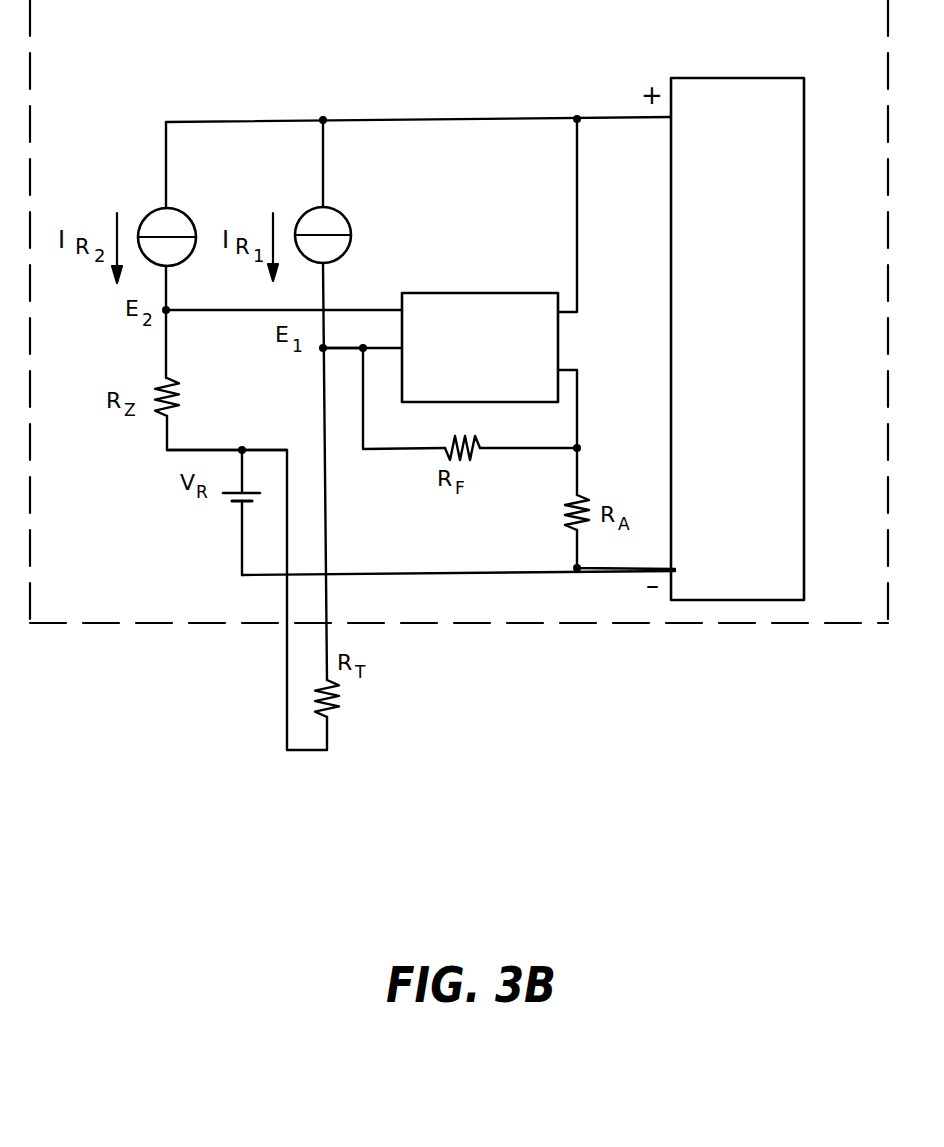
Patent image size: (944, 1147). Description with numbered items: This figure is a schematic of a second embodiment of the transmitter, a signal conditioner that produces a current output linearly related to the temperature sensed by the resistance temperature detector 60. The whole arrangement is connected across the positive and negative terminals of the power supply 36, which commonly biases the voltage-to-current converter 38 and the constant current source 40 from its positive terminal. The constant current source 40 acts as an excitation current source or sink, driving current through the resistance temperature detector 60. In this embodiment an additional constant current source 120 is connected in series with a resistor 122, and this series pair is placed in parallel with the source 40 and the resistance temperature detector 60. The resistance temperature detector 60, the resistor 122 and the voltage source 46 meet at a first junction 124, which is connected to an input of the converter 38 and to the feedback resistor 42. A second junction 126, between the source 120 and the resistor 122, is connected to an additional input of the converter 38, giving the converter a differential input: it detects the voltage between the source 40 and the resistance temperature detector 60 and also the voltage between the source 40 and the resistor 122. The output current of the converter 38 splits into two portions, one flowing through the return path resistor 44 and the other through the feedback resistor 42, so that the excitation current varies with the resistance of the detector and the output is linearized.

The power supply 36 is at (778, 148).
The additional constant current source 120 is at (183, 216).
The constant current source 40 is at (340, 213).
The voltage-to-current converter 38 is at (460, 293).
The second junction 126 is at (169, 313).
The resistor 122 is at (180, 400).
The first junction 124 is at (321, 351).
The feedback resistor 42 is at (462, 440).
The return path resistor 44 is at (566, 512).
The voltage source 46 is at (240, 506).
The resistance temperature detector 60 is at (330, 708).